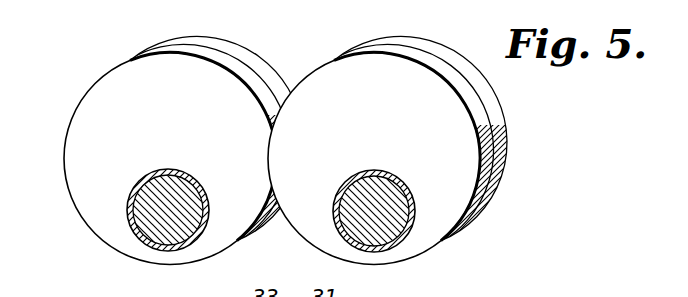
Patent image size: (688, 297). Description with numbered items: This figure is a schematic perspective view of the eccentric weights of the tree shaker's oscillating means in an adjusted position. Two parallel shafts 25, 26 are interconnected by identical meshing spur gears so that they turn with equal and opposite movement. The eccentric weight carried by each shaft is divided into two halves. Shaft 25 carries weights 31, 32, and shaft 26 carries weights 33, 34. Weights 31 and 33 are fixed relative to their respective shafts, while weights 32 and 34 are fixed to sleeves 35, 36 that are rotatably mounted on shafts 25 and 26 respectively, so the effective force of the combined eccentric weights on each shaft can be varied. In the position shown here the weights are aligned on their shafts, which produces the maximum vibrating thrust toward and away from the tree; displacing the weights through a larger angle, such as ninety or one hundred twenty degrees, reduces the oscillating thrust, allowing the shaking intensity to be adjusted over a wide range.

The shaft 25 is at (388, 194).
The shaft 26 is at (157, 199).
The eccentric weight 31 is at (453, 60).
The eccentric weight 32 is at (432, 233).
The eccentric weight 33 is at (250, 60).
The eccentric weight 34 is at (103, 91).
The sleeve 35 is at (413, 211).
The sleeve 36 is at (206, 206).